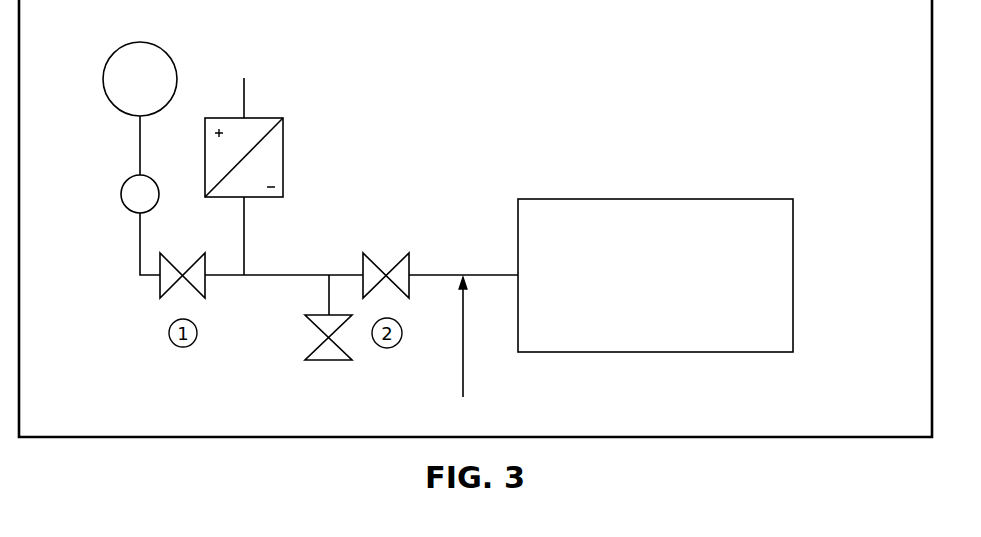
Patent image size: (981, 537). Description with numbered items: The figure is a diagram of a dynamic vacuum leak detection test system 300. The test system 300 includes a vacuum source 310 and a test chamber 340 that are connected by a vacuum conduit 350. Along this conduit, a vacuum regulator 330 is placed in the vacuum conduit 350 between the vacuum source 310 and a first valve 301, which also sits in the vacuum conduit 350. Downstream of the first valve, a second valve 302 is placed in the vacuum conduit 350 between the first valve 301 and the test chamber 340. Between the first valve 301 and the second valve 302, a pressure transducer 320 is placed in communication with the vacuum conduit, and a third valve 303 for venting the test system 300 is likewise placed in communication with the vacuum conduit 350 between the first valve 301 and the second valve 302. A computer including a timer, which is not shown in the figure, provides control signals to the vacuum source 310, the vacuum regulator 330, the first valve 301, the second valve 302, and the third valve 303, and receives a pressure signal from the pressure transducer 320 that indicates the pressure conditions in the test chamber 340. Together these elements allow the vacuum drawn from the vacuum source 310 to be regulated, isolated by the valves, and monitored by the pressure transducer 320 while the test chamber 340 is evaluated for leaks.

The test system 300 is at (673, 67).
The first valve 301 is at (193, 288).
The second valve 302 is at (374, 258).
The third valve 303 is at (330, 362).
The vacuum source 310 is at (172, 53).
The pressure transducer 320 is at (283, 157).
The vacuum regulator 330 is at (131, 212).
The test chamber 340 is at (638, 306).
The vacuum conduit 350 is at (463, 370).